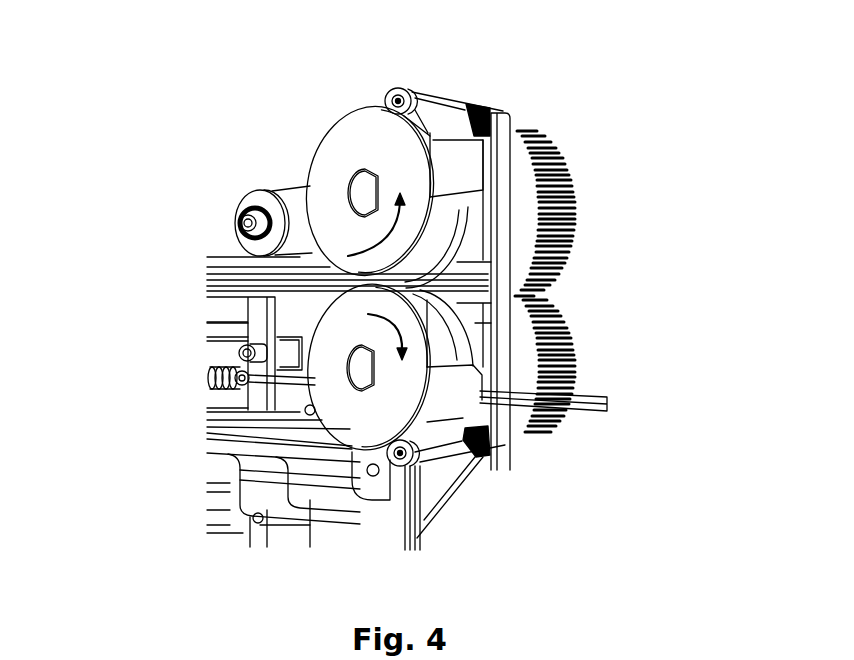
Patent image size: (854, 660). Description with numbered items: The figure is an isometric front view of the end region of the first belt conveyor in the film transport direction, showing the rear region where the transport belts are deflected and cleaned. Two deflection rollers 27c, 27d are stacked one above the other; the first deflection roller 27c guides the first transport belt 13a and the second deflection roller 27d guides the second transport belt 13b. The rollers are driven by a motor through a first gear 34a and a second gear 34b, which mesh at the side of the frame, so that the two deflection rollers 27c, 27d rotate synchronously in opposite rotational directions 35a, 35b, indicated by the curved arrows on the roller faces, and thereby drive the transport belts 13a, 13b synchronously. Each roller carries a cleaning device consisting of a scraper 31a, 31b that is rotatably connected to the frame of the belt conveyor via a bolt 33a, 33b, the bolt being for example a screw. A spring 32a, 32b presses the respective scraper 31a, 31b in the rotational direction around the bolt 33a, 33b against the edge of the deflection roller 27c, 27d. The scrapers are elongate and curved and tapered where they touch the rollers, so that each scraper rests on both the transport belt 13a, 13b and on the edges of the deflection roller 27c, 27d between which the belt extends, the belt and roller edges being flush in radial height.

The first deflection roller 27c is at (347, 137).
The second deflection roller 27d is at (330, 393).
The rotational direction 35a is at (370, 248).
The rotational direction 35b is at (390, 325).
The first transport belt 13a is at (296, 198).
The second transport belt 13b is at (441, 328).
The scraper 31a is at (443, 117).
The spring 32a is at (487, 108).
The bolt 33a is at (413, 90).
The first gear 34a is at (565, 170).
The scraper 31b is at (455, 407).
The spring 32b is at (485, 457).
The bolt 33b is at (418, 468).
The second gear 34b is at (577, 363).